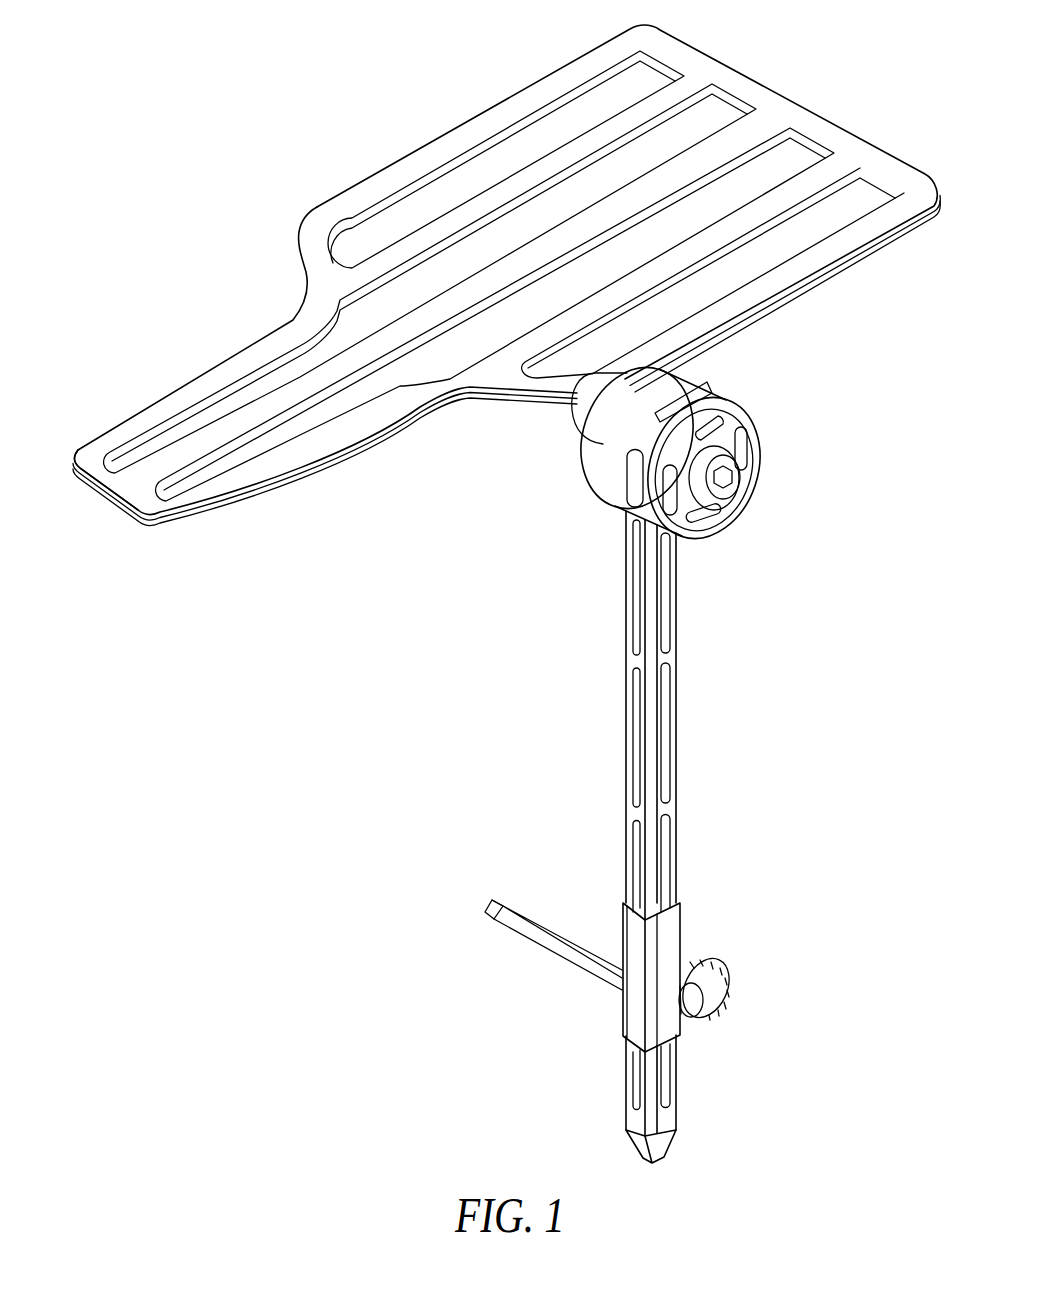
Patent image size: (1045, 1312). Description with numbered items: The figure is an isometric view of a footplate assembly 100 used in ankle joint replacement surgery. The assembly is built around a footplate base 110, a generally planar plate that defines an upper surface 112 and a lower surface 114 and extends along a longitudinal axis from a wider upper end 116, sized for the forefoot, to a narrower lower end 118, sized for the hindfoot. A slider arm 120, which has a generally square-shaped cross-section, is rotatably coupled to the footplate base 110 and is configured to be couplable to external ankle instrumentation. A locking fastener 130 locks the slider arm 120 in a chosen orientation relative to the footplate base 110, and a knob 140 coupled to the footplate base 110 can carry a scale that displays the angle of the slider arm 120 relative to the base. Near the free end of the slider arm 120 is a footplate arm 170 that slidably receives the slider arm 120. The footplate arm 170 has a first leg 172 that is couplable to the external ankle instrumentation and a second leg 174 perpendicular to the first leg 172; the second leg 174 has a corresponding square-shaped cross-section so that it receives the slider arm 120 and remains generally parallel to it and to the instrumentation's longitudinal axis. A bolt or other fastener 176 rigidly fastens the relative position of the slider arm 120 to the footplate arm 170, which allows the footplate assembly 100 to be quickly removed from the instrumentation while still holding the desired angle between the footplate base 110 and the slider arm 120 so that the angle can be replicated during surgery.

The footplate assembly 100 is at (228, 112).
The footplate base 110 is at (765, 96).
The upper surface 112 is at (710, 73).
The lower surface 114 is at (180, 558).
The upper end 116 is at (836, 122).
The lower end 118 is at (96, 460).
The slider arm 120 is at (679, 716).
The locking fastener 130 is at (740, 494).
The knob 140 is at (721, 401).
The footplate arm 170 is at (533, 962).
The first leg 172 is at (546, 926).
The second leg 174 is at (686, 924).
The bolt or other fastener 176 is at (726, 1002).